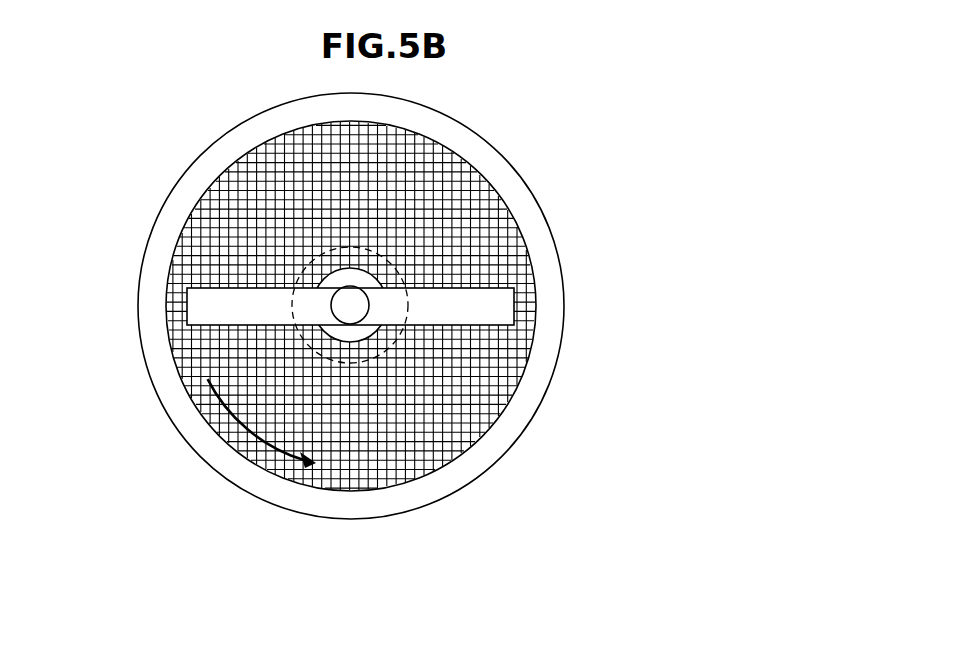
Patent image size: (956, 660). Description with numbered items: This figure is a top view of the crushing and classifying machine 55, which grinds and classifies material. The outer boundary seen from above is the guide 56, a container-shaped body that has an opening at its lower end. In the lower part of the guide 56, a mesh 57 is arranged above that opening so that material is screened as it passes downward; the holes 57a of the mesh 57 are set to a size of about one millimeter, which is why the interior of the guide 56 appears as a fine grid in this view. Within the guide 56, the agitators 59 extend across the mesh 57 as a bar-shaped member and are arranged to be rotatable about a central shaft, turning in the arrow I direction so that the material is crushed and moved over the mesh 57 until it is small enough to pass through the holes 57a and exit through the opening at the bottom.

The crushing and classifying machine 55 is at (368, 305).
The guide 56 is at (565, 298).
The mesh 57 is at (374, 287).
The holes 57a is at (435, 167).
The agitators 59 is at (195, 306).
The arrow I direction I is at (238, 425).